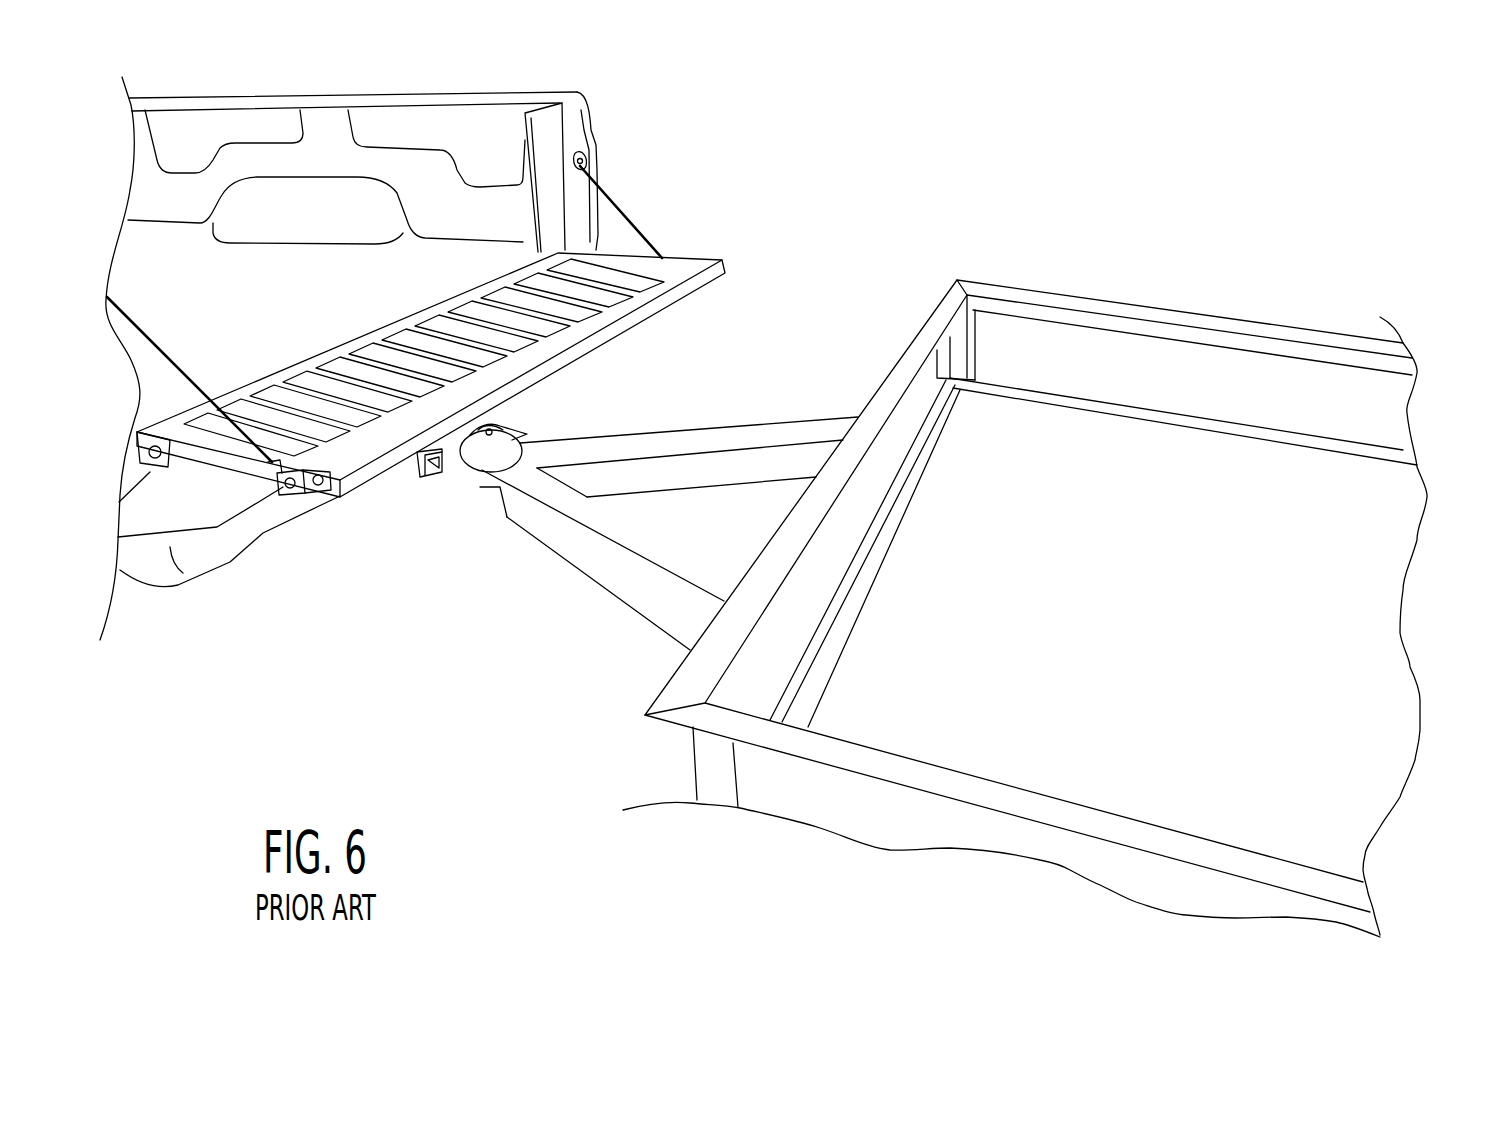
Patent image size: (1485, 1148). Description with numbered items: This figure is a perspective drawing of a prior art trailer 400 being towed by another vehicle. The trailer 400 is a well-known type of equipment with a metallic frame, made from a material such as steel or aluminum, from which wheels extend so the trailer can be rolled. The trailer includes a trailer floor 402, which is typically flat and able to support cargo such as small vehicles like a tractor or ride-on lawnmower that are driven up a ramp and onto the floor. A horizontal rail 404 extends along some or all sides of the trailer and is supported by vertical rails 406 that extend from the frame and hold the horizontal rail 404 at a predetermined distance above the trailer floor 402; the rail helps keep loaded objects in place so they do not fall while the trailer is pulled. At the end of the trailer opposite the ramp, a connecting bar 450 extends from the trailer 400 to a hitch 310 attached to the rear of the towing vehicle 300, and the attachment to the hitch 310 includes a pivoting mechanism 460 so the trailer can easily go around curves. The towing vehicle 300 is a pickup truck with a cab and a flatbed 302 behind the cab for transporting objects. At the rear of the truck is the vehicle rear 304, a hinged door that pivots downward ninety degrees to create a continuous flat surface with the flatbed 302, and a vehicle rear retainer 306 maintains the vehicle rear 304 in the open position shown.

The vehicle 300 is at (598, 82).
The flatbed 302 is at (249, 321).
The vehicle rear 304 is at (290, 496).
The vehicle rear retainer 306 is at (627, 216).
The hitch 310 is at (413, 476).
The trailer 400 is at (1013, 895).
The trailer floor 402 is at (1343, 823).
The horizontal rail 404 is at (660, 690).
The vertical rails 406 is at (967, 350).
The connecting bar 450 is at (627, 590).
The pivoting mechanism 460 is at (483, 483).